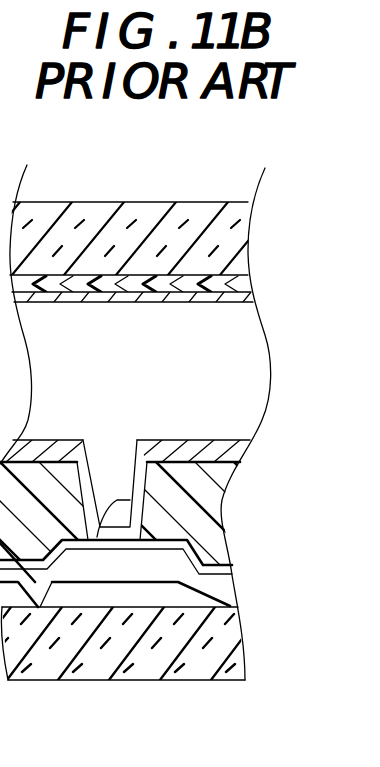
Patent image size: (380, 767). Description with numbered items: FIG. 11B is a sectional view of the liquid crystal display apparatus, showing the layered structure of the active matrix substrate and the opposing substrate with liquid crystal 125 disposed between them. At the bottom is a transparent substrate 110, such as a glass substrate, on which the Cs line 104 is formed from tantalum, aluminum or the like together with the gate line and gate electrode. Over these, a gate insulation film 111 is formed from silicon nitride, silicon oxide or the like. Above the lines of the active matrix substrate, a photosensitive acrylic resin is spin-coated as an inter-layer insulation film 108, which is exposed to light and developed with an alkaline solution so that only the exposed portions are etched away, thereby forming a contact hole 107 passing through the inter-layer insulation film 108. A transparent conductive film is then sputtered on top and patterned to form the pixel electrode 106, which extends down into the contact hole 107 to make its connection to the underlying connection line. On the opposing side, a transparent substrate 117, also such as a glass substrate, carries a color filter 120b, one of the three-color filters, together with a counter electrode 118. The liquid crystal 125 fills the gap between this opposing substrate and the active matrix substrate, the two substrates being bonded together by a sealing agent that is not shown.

The transparent substrate 117 is at (236, 239).
The color filter 120b is at (259, 284).
The counter electrode 118 is at (256, 292).
The liquid crystal 125 is at (210, 392).
The pixel electrode 106 is at (210, 456).
The inter-layer insulation film 108 is at (205, 516).
The gate insulation film 111 is at (224, 600).
The Cs line 104 is at (166, 585).
The contact hole 107 is at (99, 537).
The transparent substrate 110 is at (220, 667).